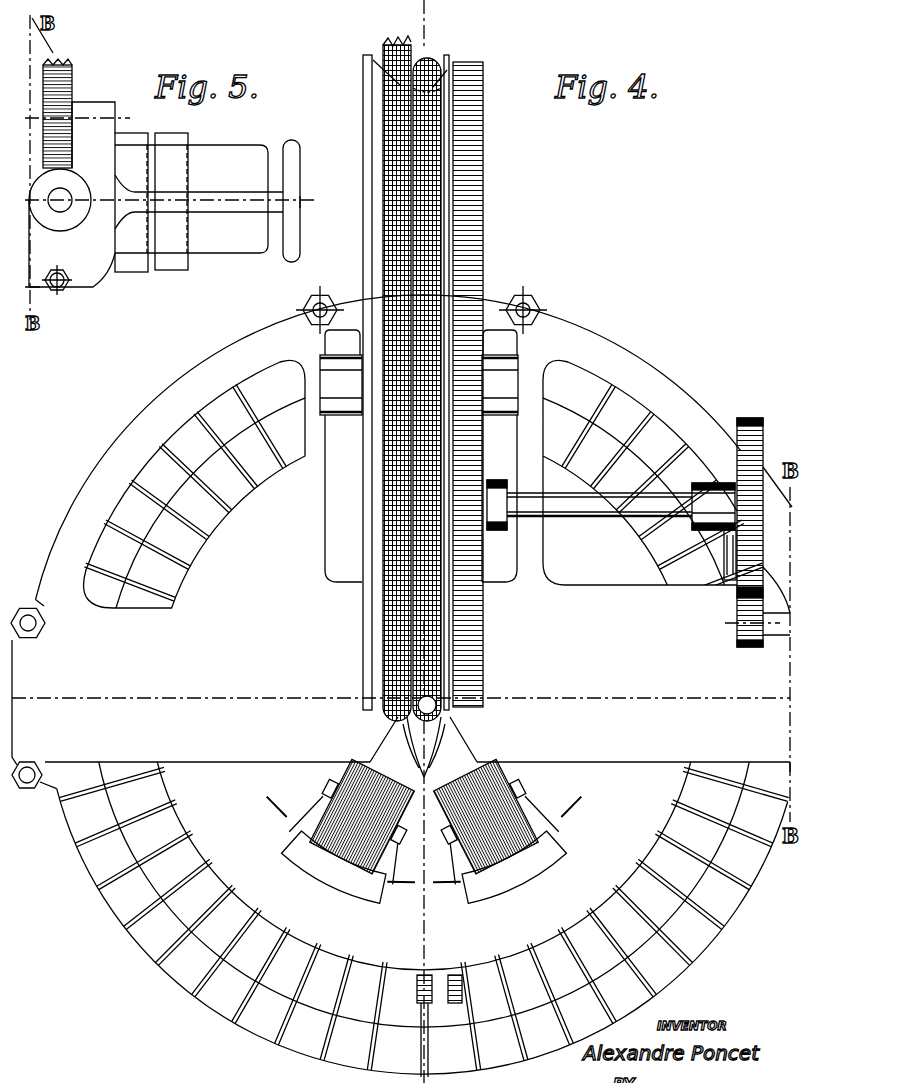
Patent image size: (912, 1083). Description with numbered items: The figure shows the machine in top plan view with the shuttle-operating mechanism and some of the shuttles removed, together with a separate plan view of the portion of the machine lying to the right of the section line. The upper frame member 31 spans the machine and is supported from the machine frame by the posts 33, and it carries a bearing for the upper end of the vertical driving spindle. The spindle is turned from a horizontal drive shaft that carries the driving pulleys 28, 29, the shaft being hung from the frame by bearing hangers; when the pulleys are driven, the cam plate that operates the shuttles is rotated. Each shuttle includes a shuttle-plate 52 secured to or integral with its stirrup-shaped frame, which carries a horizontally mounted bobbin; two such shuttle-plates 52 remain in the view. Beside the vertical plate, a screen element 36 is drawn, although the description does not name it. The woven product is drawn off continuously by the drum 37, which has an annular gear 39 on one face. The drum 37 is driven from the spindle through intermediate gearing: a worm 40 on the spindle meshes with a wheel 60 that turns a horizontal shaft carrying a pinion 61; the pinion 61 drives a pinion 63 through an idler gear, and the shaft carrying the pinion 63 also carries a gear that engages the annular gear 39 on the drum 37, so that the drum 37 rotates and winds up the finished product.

In FIG. 5, the driving pulley 28 is at (137, 272).
In FIG. 5, the driving pulley 29 is at (180, 268).
In FIG. 4, the upper frame member 31 is at (400, 686).
In FIG. 5, the post 33 is at (80, 283).
In FIG. 4, the post 33 is at (524, 300).
In FIG. 4, the screen 36 is at (390, 467).
In FIG. 4, the drum 37 is at (368, 180).
In FIG. 4, the annular gear 39 is at (483, 157).
In FIG. 5, the worm 40 is at (73, 183).
In FIG. 4, the shuttle-plate 52 is at (508, 872).
In FIG. 5, the wheel 60 is at (55, 62).
In FIG. 4, the pinion 61 is at (752, 642).
In FIG. 4, the pinion 63 is at (753, 513).